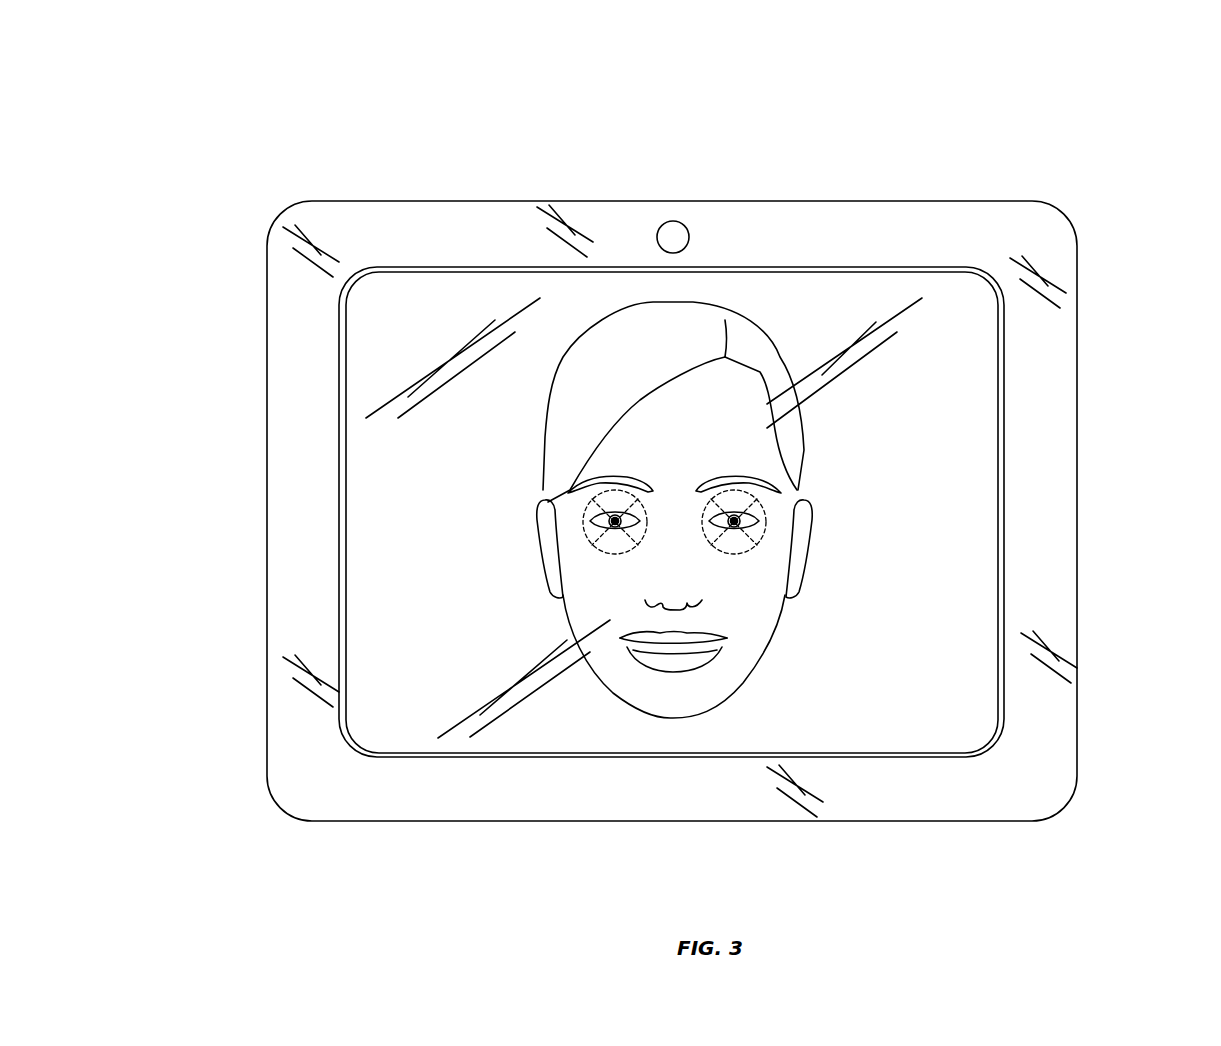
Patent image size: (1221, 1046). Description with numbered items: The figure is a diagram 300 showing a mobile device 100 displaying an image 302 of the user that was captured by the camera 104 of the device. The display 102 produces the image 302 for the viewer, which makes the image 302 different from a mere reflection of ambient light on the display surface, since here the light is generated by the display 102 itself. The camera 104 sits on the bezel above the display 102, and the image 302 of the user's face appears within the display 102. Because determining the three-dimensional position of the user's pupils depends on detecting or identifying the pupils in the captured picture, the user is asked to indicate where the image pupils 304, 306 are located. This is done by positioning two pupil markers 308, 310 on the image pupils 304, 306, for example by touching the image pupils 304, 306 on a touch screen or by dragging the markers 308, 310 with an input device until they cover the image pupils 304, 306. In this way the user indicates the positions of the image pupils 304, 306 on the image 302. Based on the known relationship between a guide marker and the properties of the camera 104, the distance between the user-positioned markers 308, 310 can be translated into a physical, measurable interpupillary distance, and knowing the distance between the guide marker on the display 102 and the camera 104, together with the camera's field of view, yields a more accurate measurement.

The mobile device 100 is at (1112, 208).
The display 102 is at (957, 290).
The camera 104 is at (676, 228).
The diagram 300 is at (182, 105).
The image 302 is at (674, 595).
The image pupil 304 is at (612, 526).
The image pupil 306 is at (738, 527).
The pupil marker 308 is at (598, 528).
The pupil marker 310 is at (752, 528).